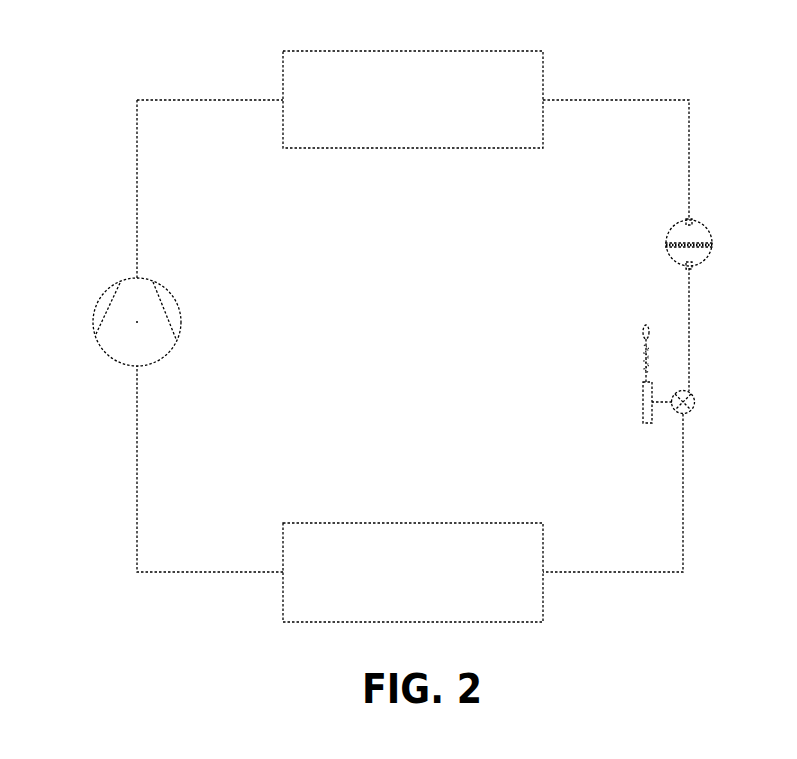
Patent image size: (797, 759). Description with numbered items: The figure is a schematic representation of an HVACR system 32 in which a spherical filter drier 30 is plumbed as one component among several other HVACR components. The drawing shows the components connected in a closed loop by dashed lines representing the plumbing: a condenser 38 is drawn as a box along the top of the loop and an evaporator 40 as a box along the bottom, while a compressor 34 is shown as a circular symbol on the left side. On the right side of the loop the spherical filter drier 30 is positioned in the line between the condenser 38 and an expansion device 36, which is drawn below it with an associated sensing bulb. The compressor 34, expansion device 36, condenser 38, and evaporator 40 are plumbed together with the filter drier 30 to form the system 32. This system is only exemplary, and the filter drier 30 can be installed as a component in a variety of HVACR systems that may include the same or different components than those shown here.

The spherical filter drier 30 is at (697, 265).
The HVACR system 32 is at (646, 75).
The compressor 34 is at (108, 353).
The expansion device 36 is at (690, 405).
The condenser 38 is at (413, 99).
The evaporator 40 is at (413, 572).